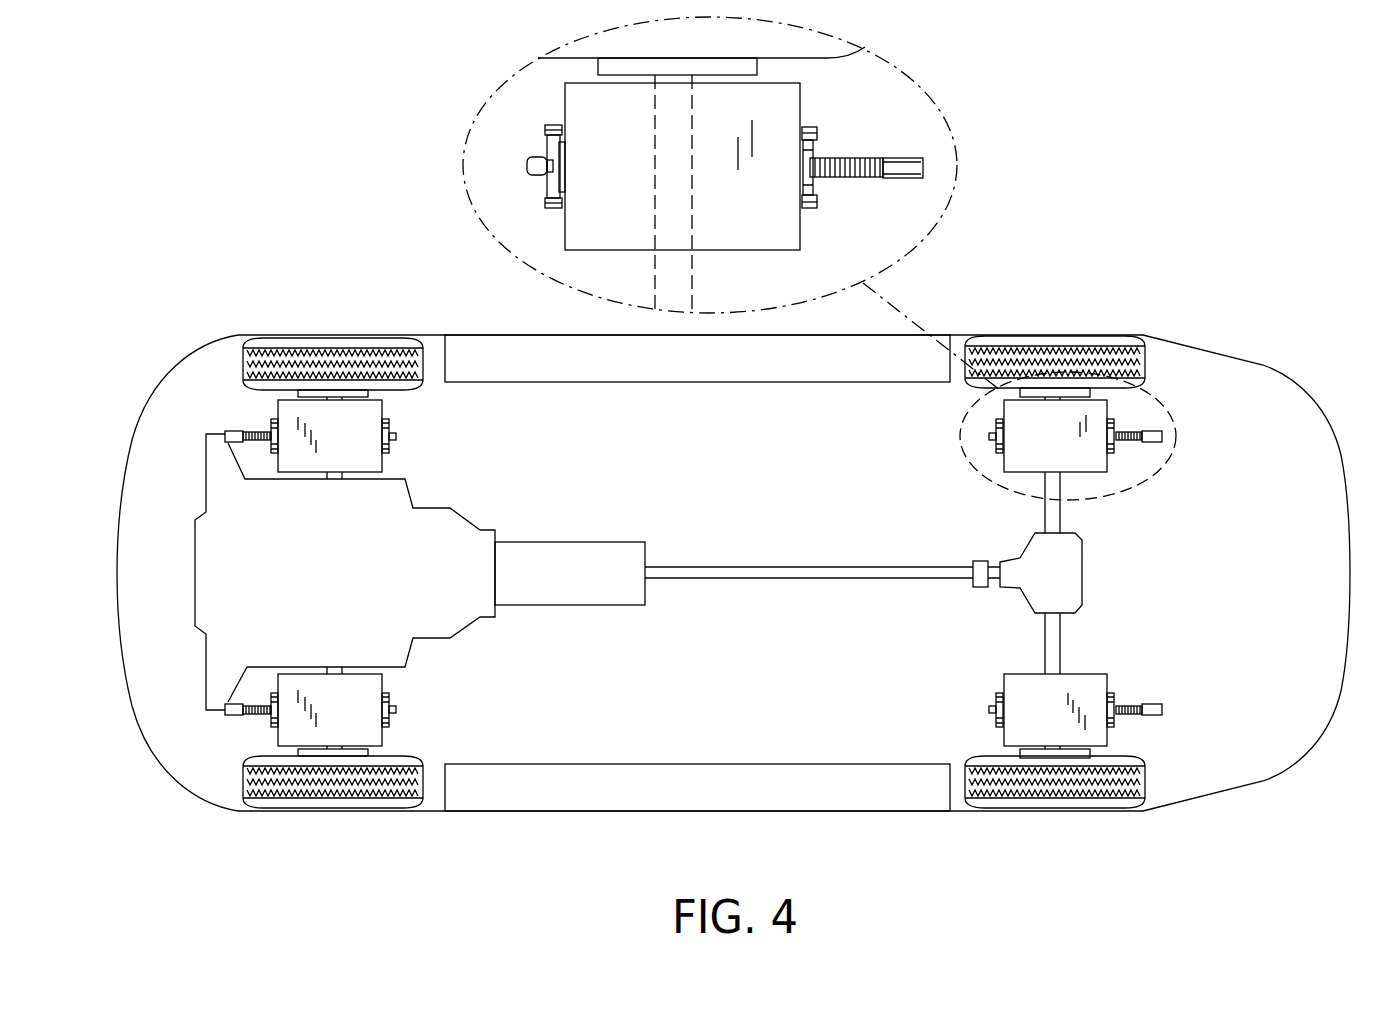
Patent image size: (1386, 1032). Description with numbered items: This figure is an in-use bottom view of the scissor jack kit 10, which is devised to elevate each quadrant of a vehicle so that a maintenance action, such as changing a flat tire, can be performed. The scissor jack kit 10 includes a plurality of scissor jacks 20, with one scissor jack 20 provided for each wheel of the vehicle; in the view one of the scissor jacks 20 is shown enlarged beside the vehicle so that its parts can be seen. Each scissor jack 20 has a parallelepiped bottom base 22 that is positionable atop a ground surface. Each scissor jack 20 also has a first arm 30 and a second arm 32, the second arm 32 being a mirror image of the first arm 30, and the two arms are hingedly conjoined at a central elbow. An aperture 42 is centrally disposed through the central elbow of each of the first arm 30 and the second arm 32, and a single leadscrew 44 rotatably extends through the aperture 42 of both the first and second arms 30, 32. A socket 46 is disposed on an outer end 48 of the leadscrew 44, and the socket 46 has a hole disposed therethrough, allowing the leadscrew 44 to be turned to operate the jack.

The scissor jack kit 10 is at (1112, 180).
The scissor jack 20 is at (917, 269).
The parallelepiped bottom base 22 is at (785, 235).
The first arm 30 is at (823, 190).
The second arm 32 is at (541, 189).
The aperture 42 is at (807, 157).
The leadscrew 44 is at (853, 160).
The socket 46 is at (923, 168).
The outer end 48 is at (880, 173).